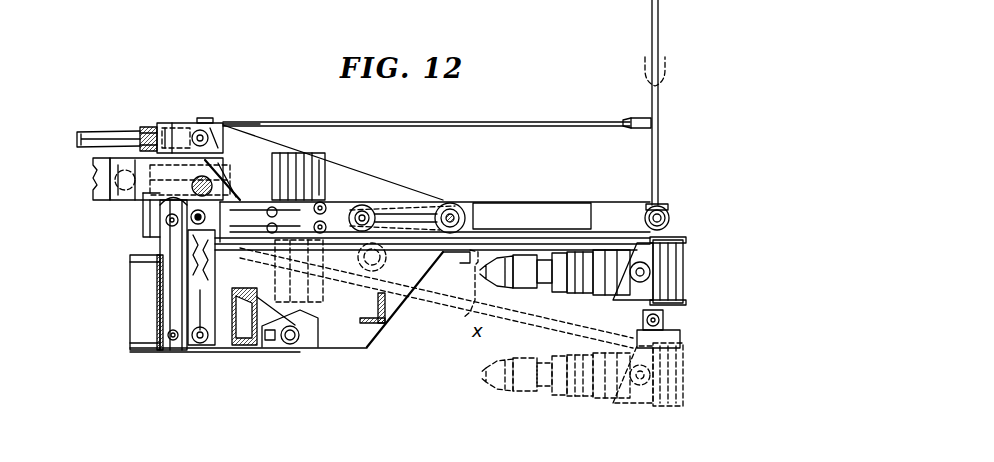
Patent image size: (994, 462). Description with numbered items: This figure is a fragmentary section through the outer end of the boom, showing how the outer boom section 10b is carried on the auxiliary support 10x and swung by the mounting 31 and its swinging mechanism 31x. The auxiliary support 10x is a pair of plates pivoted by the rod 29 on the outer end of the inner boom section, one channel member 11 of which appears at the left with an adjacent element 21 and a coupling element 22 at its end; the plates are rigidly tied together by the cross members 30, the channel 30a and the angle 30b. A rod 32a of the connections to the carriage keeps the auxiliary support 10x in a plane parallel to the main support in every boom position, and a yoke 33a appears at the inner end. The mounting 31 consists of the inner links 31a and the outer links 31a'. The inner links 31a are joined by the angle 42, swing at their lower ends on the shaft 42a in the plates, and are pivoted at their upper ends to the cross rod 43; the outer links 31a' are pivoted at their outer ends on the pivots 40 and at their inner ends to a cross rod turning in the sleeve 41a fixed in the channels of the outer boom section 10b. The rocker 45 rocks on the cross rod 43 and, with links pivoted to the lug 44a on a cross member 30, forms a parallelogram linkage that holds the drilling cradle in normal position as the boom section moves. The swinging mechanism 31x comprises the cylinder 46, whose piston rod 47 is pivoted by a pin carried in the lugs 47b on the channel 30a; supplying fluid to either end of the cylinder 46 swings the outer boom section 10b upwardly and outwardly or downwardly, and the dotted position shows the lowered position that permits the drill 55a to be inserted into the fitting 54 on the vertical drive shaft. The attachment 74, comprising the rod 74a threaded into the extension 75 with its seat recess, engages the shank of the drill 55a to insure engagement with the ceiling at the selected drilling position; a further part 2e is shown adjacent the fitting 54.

The rod 32a is at (111, 131).
The coupling 22 is at (145, 130).
The yoke 33a is at (182, 135).
The cylinder 46 is at (280, 158).
The swinging mechanism 31x is at (362, 150).
The attachment 74 is at (592, 117).
The rod 74a is at (492, 128).
The extension 75 is at (643, 117).
The drill 55a is at (652, 157).
The fitting 54 is at (646, 219).
The bracket 2e is at (648, 205).
The outer boom section 10b is at (580, 195).
The mounting 31 is at (354, 307).
The rod 29 is at (208, 188).
The cross rod 43 is at (230, 189).
The channel member 11 is at (130, 203).
The end bracket 21 is at (95, 171).
The rocker 45 is at (157, 213).
The cross member 30 is at (136, 262).
The inner links 31a is at (139, 275).
The angle 42 is at (220, 295).
The lug 44a is at (160, 352).
The shaft 42a is at (175, 342).
The auxiliary support 10x is at (224, 344).
The channel 30a is at (248, 347).
The lugs 47b is at (275, 348).
The piston rod 47 is at (303, 314).
The angle 30b is at (386, 312).
The sleeve 41a is at (365, 213).
The outer links 31a' is at (403, 200).
The pivots 40 is at (454, 205).